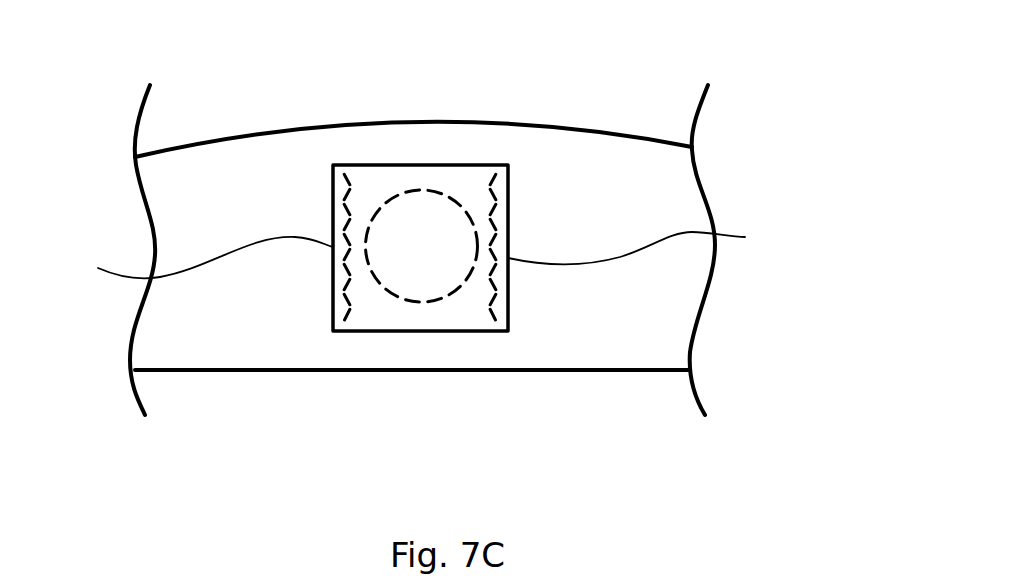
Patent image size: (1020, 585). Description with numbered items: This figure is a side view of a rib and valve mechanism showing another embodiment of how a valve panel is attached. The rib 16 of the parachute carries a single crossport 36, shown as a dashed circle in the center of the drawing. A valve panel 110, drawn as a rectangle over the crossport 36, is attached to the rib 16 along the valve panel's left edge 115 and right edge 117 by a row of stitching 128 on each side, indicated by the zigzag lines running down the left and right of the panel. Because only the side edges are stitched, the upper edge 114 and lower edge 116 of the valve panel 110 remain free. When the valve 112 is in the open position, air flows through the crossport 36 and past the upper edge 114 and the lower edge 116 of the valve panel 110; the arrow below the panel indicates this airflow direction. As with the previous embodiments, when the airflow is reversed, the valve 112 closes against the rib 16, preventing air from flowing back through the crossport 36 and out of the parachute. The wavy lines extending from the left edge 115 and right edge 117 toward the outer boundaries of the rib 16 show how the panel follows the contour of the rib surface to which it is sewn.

The rib 16 is at (660, 332).
The crossport 36 is at (460, 202).
The valve panel 110 is at (473, 307).
The valve 112 is at (358, 342).
The upper edge 114 is at (393, 170).
The left edge 115 is at (194, 257).
The lower edge 116 is at (418, 323).
The right edge 117 is at (649, 245).
The row of stitching 128 is at (343, 198).